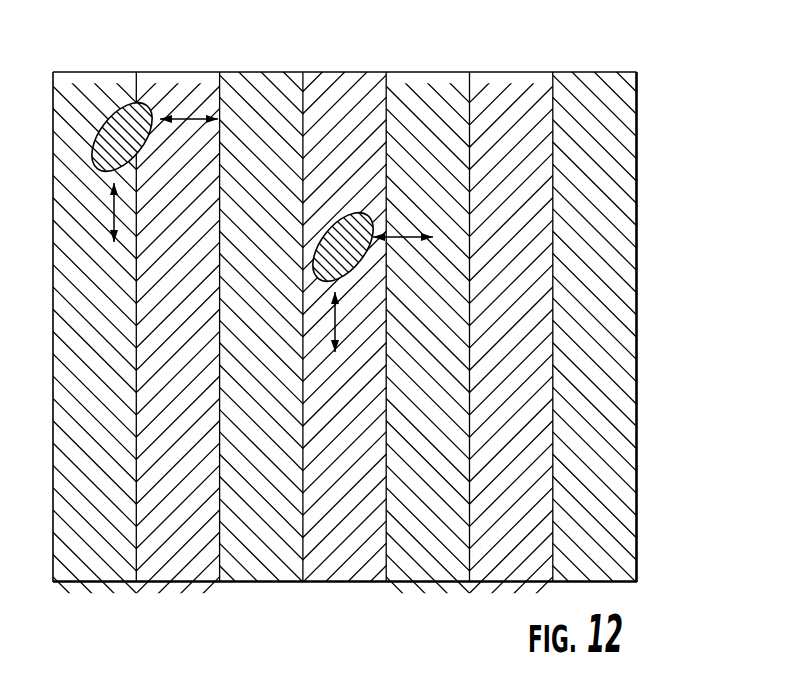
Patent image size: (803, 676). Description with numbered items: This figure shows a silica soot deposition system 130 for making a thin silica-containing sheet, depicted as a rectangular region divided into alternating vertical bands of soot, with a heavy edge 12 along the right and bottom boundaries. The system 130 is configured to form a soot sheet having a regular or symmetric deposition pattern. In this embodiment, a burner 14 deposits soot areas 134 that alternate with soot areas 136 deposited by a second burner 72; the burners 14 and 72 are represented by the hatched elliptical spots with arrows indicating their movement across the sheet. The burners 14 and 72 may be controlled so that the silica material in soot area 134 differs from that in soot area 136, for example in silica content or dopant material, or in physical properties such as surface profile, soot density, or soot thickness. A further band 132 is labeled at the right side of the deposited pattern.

The system 130 is at (698, 125).
The substrate 12 is at (637, 405).
The soot areas 134 is at (85, 87).
The soot areas 136 is at (361, 92).
The layer 132 is at (590, 302).
The burner 14 is at (115, 107).
The burner 72 is at (357, 207).